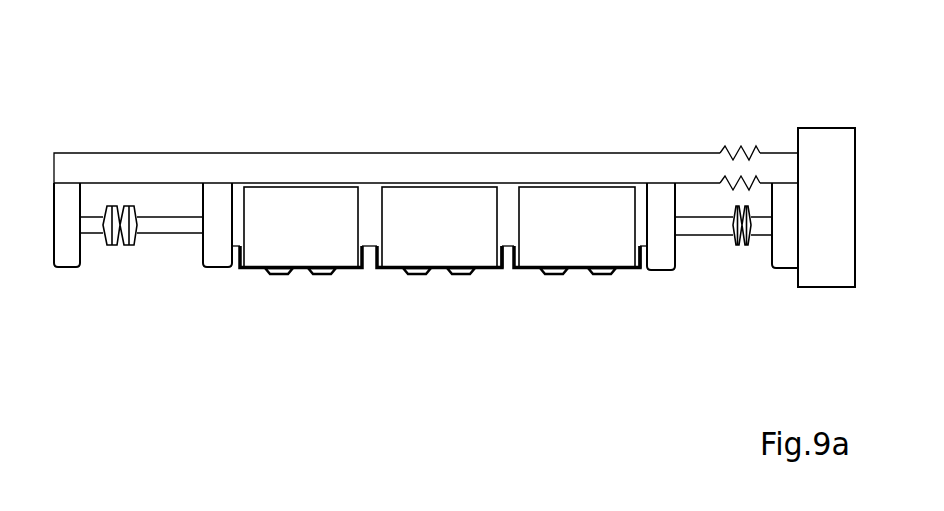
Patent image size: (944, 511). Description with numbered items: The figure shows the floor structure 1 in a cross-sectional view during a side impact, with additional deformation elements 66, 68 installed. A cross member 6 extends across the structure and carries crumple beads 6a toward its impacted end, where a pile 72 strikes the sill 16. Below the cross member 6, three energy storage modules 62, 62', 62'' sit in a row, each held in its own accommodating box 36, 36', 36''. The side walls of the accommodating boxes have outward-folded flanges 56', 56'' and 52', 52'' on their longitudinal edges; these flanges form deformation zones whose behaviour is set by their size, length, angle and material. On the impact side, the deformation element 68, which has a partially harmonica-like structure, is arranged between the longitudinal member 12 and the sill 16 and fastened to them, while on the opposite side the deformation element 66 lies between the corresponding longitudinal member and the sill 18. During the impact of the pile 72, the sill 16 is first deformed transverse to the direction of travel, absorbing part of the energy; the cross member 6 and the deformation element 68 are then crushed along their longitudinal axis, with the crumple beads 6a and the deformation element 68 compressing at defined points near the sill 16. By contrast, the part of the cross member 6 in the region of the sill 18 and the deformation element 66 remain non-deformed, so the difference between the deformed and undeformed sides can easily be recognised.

The floor structure 1 is at (225, 110).
The cross member 6 is at (693, 163).
The crumple beads 6a is at (738, 148).
The pile 72 is at (833, 143).
The sill 18 is at (68, 258).
The longitudinal member 12 is at (660, 258).
The sill 16 is at (785, 257).
The deformation element 66 is at (162, 227).
The deformation element 68 is at (705, 227).
The energy storage module 62 is at (301, 227).
The energy storage module 62' is at (439, 227).
The energy storage module 62'' is at (577, 227).
The accommodating box 36 is at (301, 307).
The accommodating box 36' is at (439, 307).
The accommodating box 36'' is at (577, 307).
The flange 56' is at (364, 289).
The flange 56'' is at (530, 289).
The flange 52' is at (486, 289).
The flange 52'' is at (632, 289).